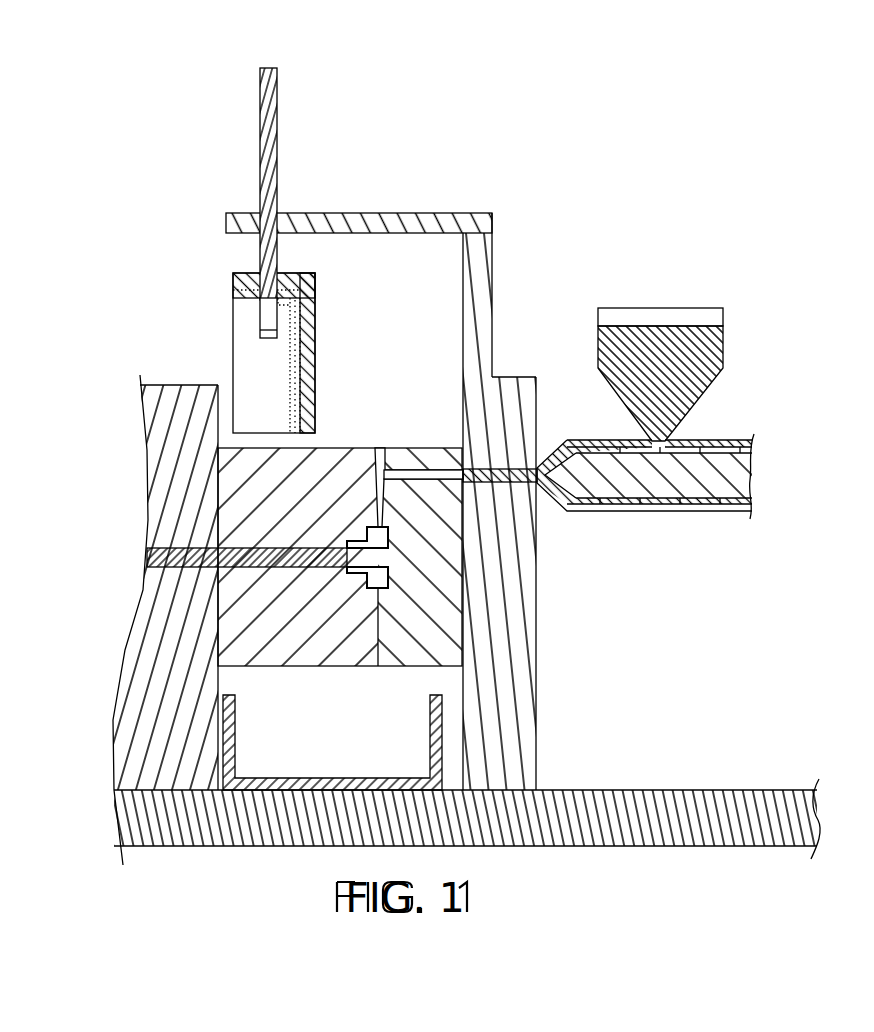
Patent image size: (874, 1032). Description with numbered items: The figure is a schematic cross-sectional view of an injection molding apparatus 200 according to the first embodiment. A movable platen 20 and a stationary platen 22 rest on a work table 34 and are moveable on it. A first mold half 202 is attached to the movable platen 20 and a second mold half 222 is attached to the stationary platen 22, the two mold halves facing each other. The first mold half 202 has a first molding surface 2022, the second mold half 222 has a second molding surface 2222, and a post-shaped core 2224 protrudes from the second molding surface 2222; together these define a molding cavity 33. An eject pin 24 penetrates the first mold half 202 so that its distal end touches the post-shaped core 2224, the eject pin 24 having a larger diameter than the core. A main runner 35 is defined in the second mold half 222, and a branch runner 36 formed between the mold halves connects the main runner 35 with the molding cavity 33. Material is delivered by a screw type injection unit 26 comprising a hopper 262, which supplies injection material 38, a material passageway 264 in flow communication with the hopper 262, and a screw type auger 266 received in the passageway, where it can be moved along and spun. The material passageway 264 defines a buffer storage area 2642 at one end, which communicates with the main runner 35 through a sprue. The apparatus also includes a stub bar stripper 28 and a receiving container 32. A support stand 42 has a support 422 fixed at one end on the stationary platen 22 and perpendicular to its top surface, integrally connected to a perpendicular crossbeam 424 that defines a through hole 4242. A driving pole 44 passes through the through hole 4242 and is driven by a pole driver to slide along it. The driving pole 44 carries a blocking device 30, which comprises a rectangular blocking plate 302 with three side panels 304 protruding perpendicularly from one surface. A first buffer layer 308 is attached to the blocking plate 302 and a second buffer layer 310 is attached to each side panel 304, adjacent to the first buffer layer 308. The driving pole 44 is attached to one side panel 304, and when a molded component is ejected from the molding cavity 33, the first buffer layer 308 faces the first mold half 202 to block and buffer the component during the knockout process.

The injection molding apparatus 200 is at (397, 97).
The movable platen 20 is at (167, 423).
The first mold half 202 is at (236, 630).
The first molding surface 2022 is at (257, 662).
The stationary platen 22 is at (503, 744).
The second mold half 222 is at (440, 640).
The second molding surface 2222 is at (383, 570).
The post-shaped core 2224 is at (383, 543).
The eject pin 24 is at (160, 558).
The injection unit 26 is at (666, 399).
The hopper 262 is at (723, 350).
The material passageway 264 is at (600, 446).
The buffer storage area 2642 is at (561, 440).
The screw type auger 266 is at (710, 508).
The stub bar stripper 28 is at (262, 325).
The blocking device 30 is at (226, 328).
The blocking plate 302 is at (258, 297).
The side panel 304 is at (250, 278).
The first buffer layer 308 is at (297, 338).
The second buffer layer 310 is at (282, 290).
The receiving container 32 is at (265, 788).
The molding cavity 33 is at (465, 519).
The work table 34 is at (770, 803).
The main runner 35 is at (395, 470).
The branch runner 36 is at (378, 450).
The injection material 38 is at (698, 372).
The support stand 42 is at (406, 257).
The support 422 is at (478, 273).
The crossbeam 424 is at (430, 213).
The through hole 4242 is at (258, 232).
The driving pole 44 is at (267, 113).